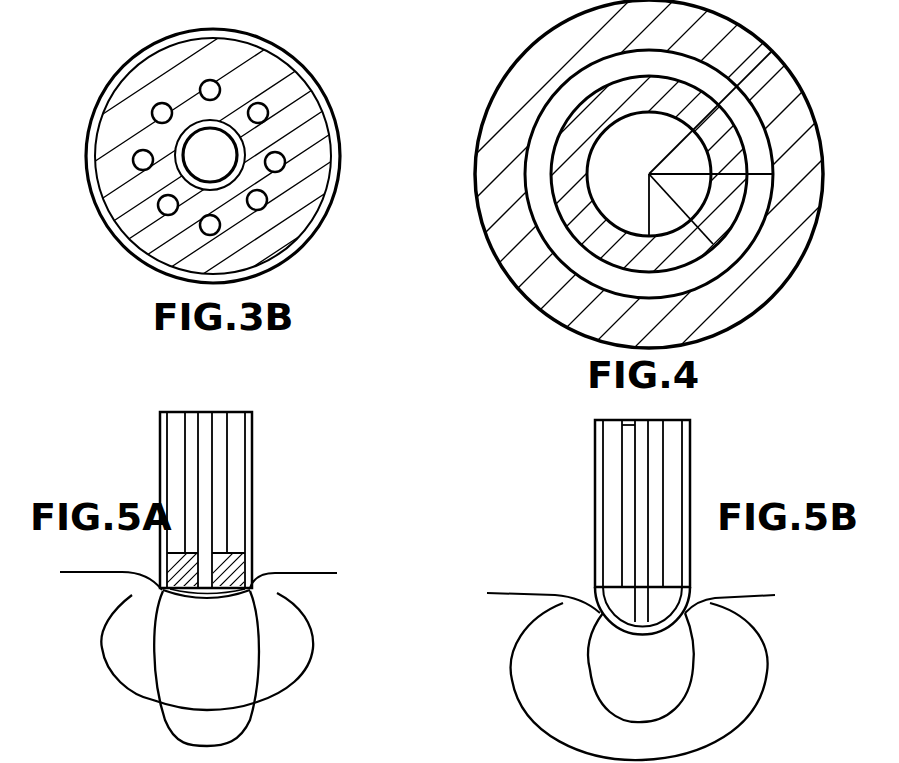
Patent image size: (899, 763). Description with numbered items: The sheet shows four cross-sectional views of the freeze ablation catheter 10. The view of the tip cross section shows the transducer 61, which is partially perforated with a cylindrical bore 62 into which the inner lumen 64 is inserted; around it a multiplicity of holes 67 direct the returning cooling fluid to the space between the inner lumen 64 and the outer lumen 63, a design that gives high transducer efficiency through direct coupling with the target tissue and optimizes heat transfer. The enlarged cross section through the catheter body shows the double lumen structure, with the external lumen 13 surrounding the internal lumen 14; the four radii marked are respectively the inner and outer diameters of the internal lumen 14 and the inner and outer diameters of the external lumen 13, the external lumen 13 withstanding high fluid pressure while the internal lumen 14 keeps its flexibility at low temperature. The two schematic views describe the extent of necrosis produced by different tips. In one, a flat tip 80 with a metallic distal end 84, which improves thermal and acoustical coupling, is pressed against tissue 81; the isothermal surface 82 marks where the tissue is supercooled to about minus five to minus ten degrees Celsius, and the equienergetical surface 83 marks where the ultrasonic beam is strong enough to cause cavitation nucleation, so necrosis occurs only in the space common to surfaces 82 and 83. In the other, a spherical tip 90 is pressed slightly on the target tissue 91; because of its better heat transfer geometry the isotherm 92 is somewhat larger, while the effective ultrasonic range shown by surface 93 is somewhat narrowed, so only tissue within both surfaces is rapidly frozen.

In FIG. 4, the catheter 10 is at (674, 212).
In FIG. 4, the external lumen 13 is at (506, 76).
In FIG. 4, the internal lumen 14 is at (580, 97).
In FIG. 3B, the transducer 61 is at (283, 102).
In FIG. 3B, the cylindrical bore 62 is at (220, 153).
In FIG. 3B, the outer lumen 63 is at (320, 226).
In FIG. 3B, the inner lumen 64 is at (178, 150).
In FIG. 3B, the holes 67 is at (202, 233).
In FIG. 5A, the flat tip 80 is at (266, 446).
In FIG. 5A, the tissue 81 is at (309, 573).
In FIG. 5A, the isothermal surface 82 is at (307, 663).
In FIG. 5A, the ultrasonic beam equienergetical surface 83 is at (243, 727).
In FIG. 5A, the distal end 84 is at (130, 573).
In FIG. 5B, the spherical tip 90 is at (588, 485).
In FIG. 5B, the target tissue 91 is at (522, 593).
In FIG. 5B, the isotherm 92 is at (530, 630).
In FIG. 5B, the surface 93 is at (593, 693).